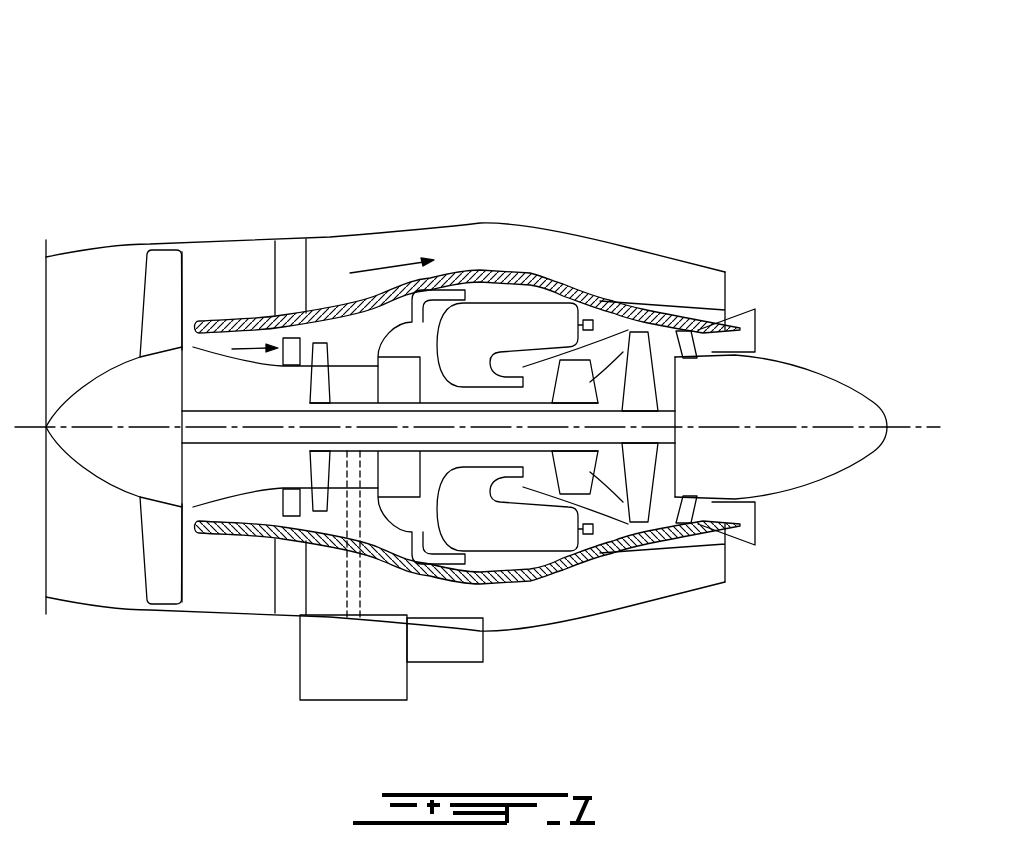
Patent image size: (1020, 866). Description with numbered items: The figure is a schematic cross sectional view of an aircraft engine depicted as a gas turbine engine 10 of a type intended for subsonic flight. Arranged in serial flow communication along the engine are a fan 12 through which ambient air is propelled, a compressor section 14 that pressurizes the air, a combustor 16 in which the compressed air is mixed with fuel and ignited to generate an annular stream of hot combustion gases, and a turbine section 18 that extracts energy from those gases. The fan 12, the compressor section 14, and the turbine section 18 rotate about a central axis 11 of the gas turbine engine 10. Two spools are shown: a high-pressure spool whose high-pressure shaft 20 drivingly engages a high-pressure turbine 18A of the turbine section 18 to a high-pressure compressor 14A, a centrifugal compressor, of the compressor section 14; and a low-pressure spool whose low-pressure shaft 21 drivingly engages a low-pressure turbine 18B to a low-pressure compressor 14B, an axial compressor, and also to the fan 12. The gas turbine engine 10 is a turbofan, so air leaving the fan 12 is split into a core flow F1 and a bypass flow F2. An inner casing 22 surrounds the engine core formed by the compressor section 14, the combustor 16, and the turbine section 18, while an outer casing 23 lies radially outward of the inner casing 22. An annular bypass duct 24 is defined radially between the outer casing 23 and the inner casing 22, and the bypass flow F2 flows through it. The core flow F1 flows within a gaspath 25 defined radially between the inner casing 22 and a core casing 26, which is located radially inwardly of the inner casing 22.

The gas turbine engine 10 is at (645, 143).
The central axis 11 is at (915, 427).
The fan 12 is at (157, 543).
The compressor section 14 is at (343, 348).
The high-pressure compressor 14A is at (320, 512).
The low-pressure compressor 14B is at (283, 490).
The combustor 16 is at (511, 322).
The turbine section 18 is at (608, 478).
The high-pressure turbine 18A is at (570, 383).
The low-pressure turbine 18B is at (635, 358).
The high-pressure shaft 20 is at (452, 456).
The low-pressure shaft 21 is at (232, 412).
The inner casing 22 is at (650, 326).
The outer casing 23 is at (692, 252).
The bypass duct 24 is at (572, 601).
The gaspath 25 is at (233, 504).
The core casing 26 is at (190, 505).
The core flow F1 is at (252, 344).
The bypass flow F2 is at (380, 258).